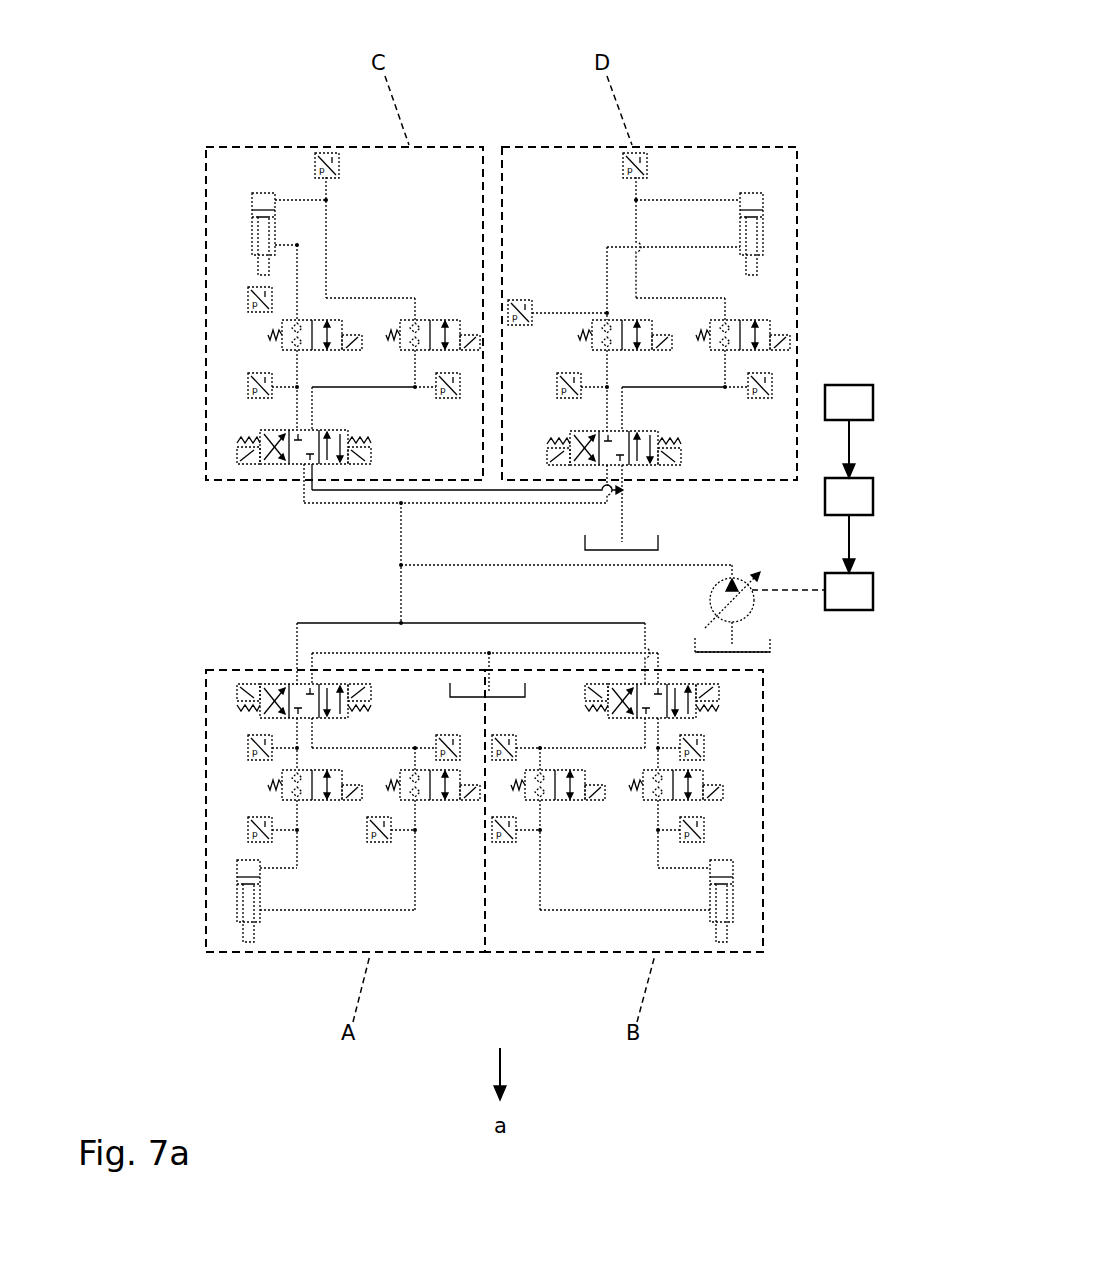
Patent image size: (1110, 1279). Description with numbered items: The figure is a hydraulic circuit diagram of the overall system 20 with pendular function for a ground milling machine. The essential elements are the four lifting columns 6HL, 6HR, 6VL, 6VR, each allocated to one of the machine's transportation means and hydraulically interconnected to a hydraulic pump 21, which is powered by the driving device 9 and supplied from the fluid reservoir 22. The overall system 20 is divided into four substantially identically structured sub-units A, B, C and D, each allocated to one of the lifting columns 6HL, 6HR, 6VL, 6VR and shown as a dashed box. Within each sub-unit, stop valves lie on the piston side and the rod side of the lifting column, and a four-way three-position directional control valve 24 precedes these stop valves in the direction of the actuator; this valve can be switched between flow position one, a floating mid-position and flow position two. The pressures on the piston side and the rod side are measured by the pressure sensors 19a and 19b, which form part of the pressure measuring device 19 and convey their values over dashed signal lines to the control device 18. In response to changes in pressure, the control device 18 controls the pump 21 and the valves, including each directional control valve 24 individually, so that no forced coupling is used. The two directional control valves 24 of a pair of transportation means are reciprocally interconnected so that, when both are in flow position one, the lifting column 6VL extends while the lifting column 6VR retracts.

The overall system 20 is at (722, 92).
The lifting column 6HL is at (251, 207).
The lifting column 6HR is at (762, 207).
The lifting column 6VL is at (240, 875).
The lifting column 6VR is at (726, 877).
The pressure sensor 19a is at (319, 165).
The pressure sensor 19b is at (256, 298).
The 4/3 directional control valve 24 is at (263, 455).
The pressure measuring device 19 is at (858, 398).
The control device 18 is at (858, 492).
The driving device 9 is at (835, 588).
The hydraulic pump 21 is at (750, 610).
The fluid reservoir 22 is at (750, 645).